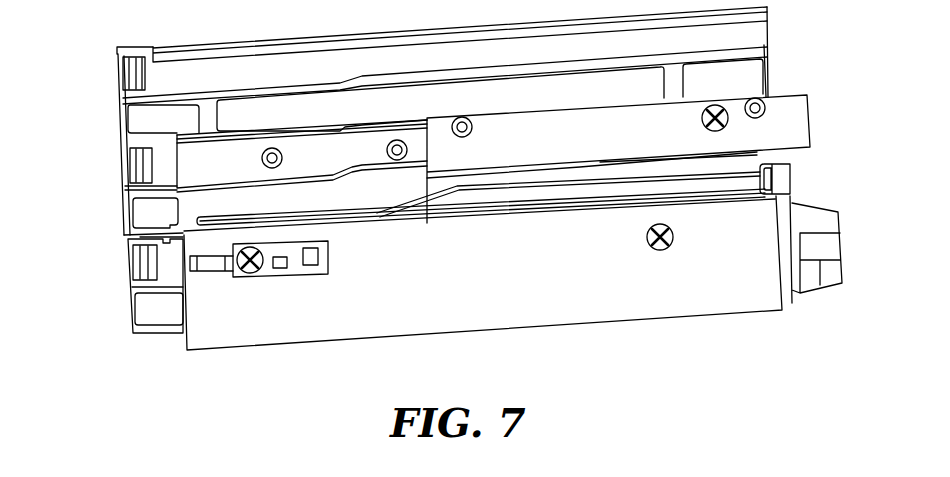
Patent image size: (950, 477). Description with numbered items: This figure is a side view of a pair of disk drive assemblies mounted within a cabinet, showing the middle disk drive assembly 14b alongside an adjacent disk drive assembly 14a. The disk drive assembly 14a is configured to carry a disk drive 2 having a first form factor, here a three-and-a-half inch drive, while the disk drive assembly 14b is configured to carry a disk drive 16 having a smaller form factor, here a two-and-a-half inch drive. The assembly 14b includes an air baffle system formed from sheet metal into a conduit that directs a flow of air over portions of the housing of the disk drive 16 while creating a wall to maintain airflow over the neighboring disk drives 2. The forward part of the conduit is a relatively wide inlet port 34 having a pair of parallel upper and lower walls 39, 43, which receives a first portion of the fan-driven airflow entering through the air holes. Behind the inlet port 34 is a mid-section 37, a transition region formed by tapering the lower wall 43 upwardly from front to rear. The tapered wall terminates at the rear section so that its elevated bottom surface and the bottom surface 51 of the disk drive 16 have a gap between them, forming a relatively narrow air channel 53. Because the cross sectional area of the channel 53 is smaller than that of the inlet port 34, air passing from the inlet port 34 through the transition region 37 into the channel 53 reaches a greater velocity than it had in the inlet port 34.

The disk drive 2 is at (512, 319).
The disk drive assembly 14a is at (116, 306).
The disk drive assembly 14b is at (104, 185).
The disk drive 16 is at (570, 153).
The inlet port 34 is at (228, 180).
The mid-section 37 is at (443, 193).
The upper wall 39 is at (333, 140).
The lower wall 43 is at (327, 213).
The bottom surface 51 is at (637, 162).
The air channel 53 is at (760, 166).